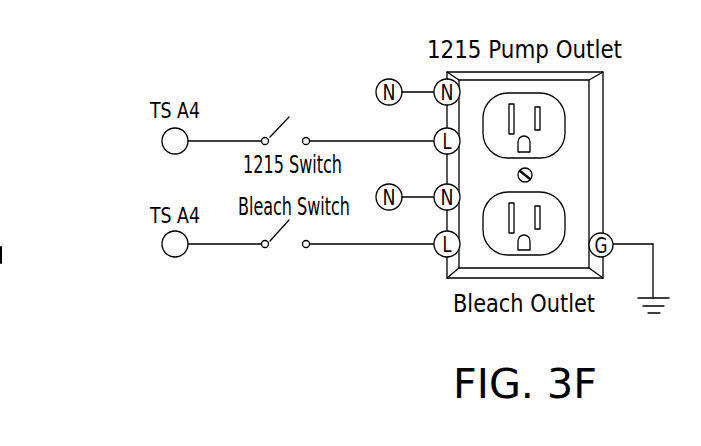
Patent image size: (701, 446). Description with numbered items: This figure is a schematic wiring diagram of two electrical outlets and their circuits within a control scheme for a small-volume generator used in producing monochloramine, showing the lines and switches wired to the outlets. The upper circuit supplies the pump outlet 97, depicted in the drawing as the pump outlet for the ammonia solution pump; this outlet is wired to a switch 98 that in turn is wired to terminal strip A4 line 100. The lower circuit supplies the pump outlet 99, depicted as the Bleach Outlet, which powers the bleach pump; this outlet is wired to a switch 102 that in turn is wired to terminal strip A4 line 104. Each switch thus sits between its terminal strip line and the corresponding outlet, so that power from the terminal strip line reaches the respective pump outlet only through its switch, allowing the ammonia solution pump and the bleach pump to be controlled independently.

The pump outlet 97 is at (555, 135).
The switch 98 is at (280, 120).
The pump outlet 99 is at (555, 230).
The terminal strip A4 line 100 is at (162, 140).
The switch 102 is at (281, 229).
The terminal strip A4 line 104 is at (162, 243).